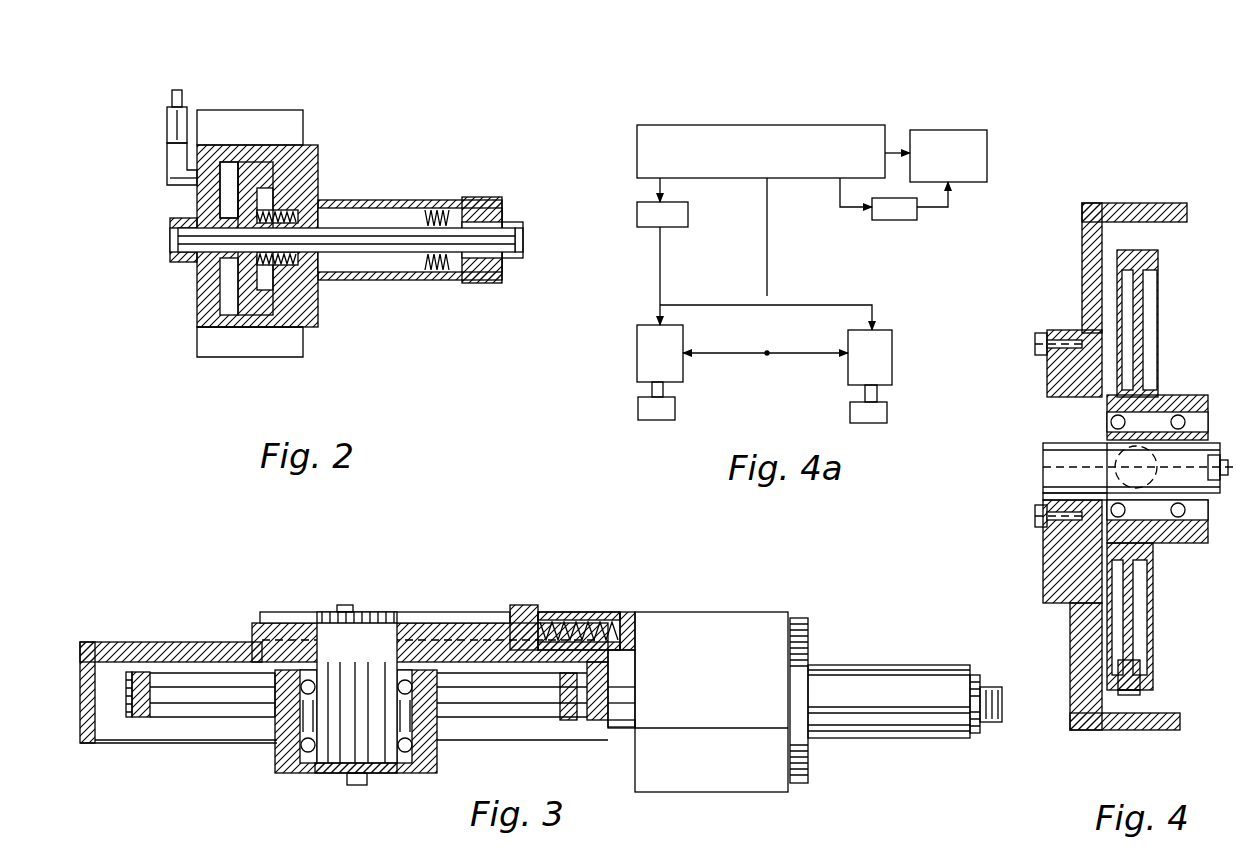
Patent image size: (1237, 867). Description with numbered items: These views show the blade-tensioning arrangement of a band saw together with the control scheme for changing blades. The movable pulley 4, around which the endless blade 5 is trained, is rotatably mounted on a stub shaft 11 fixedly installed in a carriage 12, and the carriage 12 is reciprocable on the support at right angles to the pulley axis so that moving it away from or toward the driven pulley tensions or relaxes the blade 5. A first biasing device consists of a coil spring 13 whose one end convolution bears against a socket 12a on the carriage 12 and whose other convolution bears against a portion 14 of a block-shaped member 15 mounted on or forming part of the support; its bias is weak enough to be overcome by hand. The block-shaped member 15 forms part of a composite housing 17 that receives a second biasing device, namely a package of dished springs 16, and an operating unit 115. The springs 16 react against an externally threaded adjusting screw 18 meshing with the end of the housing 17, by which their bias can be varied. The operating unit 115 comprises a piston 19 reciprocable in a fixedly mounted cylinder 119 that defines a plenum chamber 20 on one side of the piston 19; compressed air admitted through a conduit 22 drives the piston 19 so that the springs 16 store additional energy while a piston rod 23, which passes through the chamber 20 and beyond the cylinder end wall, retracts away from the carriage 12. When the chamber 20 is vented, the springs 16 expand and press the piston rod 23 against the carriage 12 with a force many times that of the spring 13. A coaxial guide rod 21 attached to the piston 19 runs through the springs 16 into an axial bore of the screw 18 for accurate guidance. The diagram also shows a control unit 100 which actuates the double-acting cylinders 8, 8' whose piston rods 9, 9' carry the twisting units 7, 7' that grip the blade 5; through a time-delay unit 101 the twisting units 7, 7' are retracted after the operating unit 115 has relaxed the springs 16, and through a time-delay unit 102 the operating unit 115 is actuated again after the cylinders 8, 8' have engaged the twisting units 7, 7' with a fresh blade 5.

In FIG. 3, the pulley 4 is at (145, 692).
In FIG. 4, the pulley 4 is at (1140, 684).
In FIG. 3, the endless blade 5 is at (132, 700).
In FIG. 4, the endless blade 5 is at (1135, 693).
In FIG. 4A, the twisting unit 7 is at (672, 419).
In FIG. 4A, the twisting unit 7' is at (892, 418).
In FIG. 4A, the double-acting cylinder 8 is at (754, 280).
In FIG. 4A, the double-acting cylinder 8' is at (896, 355).
In FIG. 4A, the piston rod 9 is at (687, 383).
In FIG. 4A, the piston rod 9' is at (904, 387).
In FIG. 3, the stub shaft 11 is at (350, 652).
In FIG. 4, the stub shaft 11 is at (1070, 462).
In FIG. 3, the carriage 12 is at (478, 632).
In FIG. 4, the carriage 12 is at (1075, 410).
In FIG. 3, the socket 12a is at (476, 646).
In FIG. 3, the coil spring 13 is at (578, 609).
In FIG. 3, the portion of block-shaped member 14 is at (628, 610).
In FIG. 2, the block-shaped member 15 is at (168, 322).
In FIG. 3, the block-shaped member 15 is at (690, 604).
In FIG. 2, the dished springs 16 is at (428, 216).
In FIG. 2, the composite housing 17 is at (370, 205).
In FIG. 3, the composite housing 17 is at (873, 686).
In FIG. 2, the adjusting screw 18 is at (480, 214).
In FIG. 3, the adjusting screw 18 is at (990, 688).
In FIG. 2, the piston 19 is at (252, 292).
In FIG. 2, the plenum chamber 20 is at (222, 192).
In FIG. 2, the guide rod 21 is at (378, 246).
In FIG. 2, the conduit 22 is at (168, 121).
In FIG. 2, the piston rod 23 is at (172, 245).
In FIG. 3, the piston rod 23 is at (626, 728).
In FIG. 4, the piston rod 23 is at (1058, 502).
In FIG. 4A, the control unit 100 is at (770, 125).
In FIG. 4A, the time-delay unit 101 is at (680, 216).
In FIG. 4A, the time-delay unit 102 is at (892, 212).
In FIG. 2, the operating unit 115 is at (176, 366).
In FIG. 4A, the operating unit 115 is at (987, 148).
In FIG. 2, the cylinder 119 is at (256, 326).